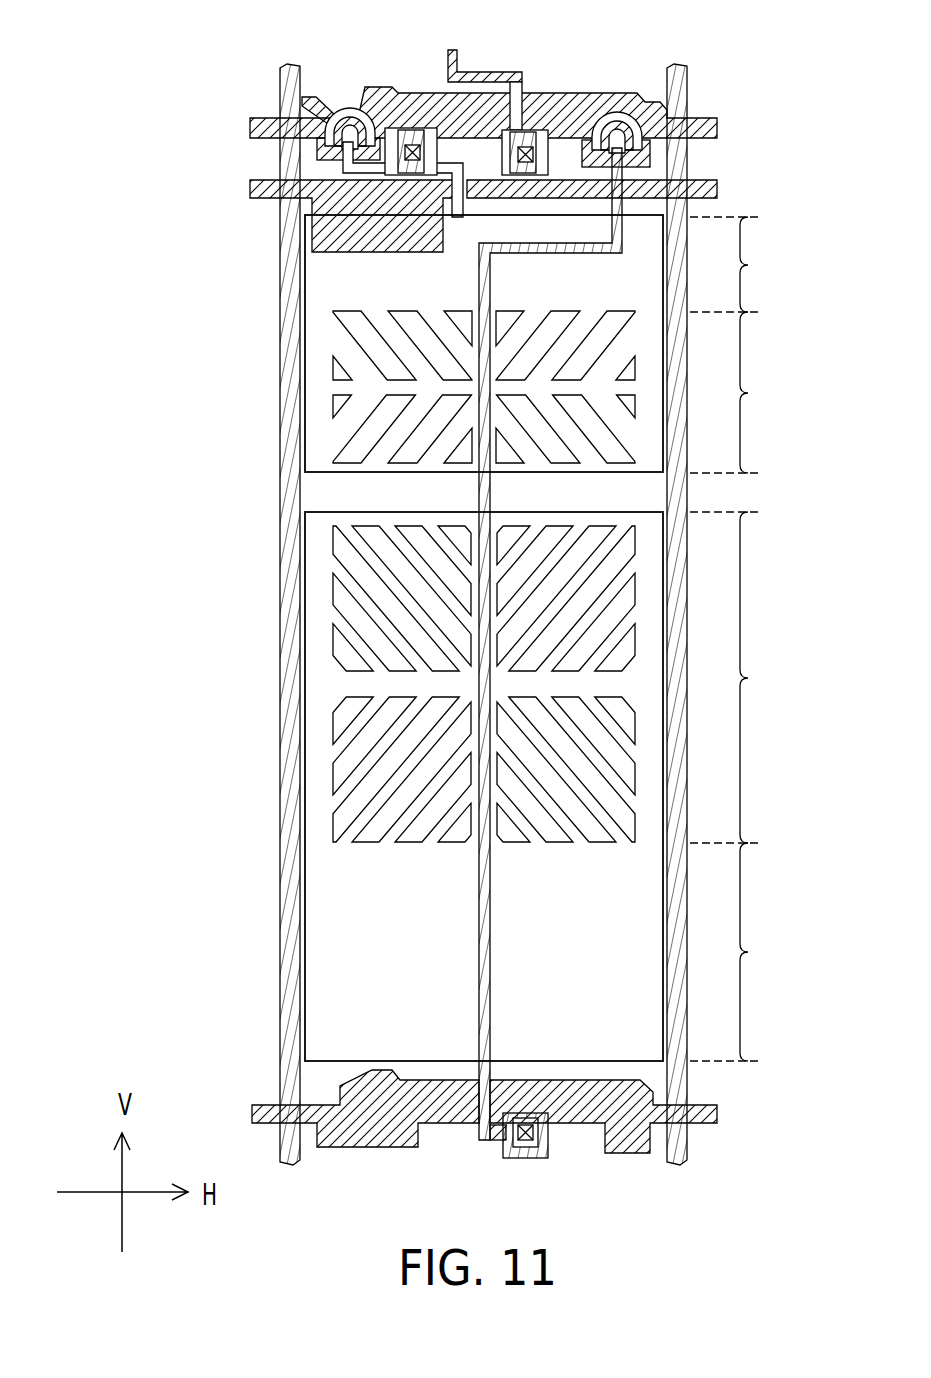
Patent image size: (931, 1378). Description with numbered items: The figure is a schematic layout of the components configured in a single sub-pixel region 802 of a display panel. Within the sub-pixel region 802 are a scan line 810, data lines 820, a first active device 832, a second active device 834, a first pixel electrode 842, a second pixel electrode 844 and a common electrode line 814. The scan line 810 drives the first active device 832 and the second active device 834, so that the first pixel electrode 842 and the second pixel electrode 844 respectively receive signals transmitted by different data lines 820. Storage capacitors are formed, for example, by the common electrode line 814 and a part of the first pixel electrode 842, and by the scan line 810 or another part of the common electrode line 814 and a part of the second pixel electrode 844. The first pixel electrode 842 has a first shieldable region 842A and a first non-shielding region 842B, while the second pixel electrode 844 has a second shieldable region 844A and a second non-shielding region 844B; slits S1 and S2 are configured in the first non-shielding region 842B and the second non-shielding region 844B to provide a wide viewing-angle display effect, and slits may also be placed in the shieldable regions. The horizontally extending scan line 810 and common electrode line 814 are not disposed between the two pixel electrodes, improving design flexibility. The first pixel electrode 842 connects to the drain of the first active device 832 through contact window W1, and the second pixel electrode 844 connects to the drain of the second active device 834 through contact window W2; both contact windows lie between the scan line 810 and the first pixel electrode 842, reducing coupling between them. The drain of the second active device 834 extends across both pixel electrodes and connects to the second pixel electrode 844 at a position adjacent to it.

The sub-pixel region 802 is at (812, 1245).
The scan line 810 is at (560, 106).
The common electrode line 814 is at (668, 174).
The data lines 820 is at (292, 66).
The first active device 832 is at (359, 96).
The second active device 834 is at (616, 96).
The first pixel electrode 842 is at (434, 343).
The first shieldable region 842A is at (773, 264).
The first non-shielding region 842B is at (773, 392).
The second pixel electrode 844 is at (434, 786).
The second shieldable region 844A is at (773, 952).
The second non-shielding region 844B is at (773, 677).
The slits S1 is at (356, 425).
The slits S2 is at (346, 765).
The contact window W1 is at (409, 140).
The contact window W2 is at (527, 142).